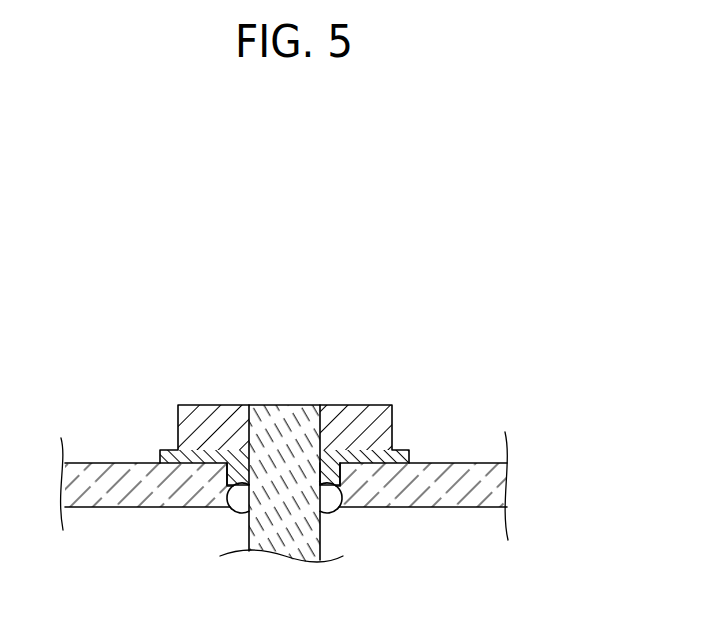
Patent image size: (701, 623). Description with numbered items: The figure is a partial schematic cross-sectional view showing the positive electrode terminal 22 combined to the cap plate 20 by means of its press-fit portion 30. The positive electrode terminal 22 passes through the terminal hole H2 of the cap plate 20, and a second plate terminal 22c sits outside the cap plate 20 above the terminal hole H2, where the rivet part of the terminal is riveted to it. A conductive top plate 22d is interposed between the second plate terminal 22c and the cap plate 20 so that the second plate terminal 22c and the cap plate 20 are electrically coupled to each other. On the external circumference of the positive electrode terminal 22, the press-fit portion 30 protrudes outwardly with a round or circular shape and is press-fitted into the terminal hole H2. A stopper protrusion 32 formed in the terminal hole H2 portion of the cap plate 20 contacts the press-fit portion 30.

The cap plate 20 is at (106, 468).
The positive electrode terminal 22 is at (280, 399).
The second plate terminal 22c is at (367, 415).
The conductive top plate 22d is at (200, 451).
The press-fit portion 30 is at (241, 495).
The stopper protrusion 32 is at (233, 512).
The terminal hole H2 is at (332, 477).